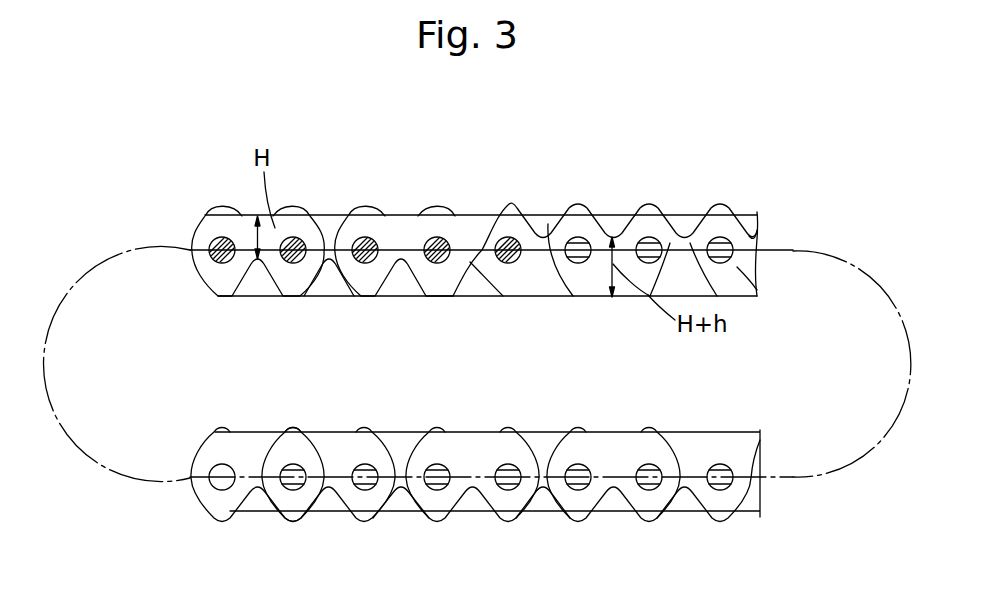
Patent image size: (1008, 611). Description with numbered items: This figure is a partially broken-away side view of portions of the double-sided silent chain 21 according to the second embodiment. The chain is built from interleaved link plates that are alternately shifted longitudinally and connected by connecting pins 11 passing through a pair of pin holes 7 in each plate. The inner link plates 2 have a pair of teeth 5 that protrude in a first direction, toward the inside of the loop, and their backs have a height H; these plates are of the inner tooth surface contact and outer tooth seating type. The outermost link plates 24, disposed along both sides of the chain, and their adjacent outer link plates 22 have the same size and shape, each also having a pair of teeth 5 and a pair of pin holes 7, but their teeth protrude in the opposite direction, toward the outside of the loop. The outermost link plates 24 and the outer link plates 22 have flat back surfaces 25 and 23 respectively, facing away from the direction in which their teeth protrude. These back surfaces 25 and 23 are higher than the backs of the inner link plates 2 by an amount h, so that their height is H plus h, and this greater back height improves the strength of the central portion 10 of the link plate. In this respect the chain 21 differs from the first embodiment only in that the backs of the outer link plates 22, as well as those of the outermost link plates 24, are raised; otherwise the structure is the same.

The inner link plate 2 is at (240, 213).
The teeth 5 is at (509, 204).
The pin holes 7 is at (213, 258).
The central portion 10 is at (623, 248).
The connecting pins 11 is at (655, 240).
The double-sided silent chain 21 is at (650, 189).
The outer link plate 22 is at (257, 282).
The flat back surface 23 is at (546, 288).
The outermost link plate 24 is at (325, 283).
The flat back surface 25 is at (627, 297).